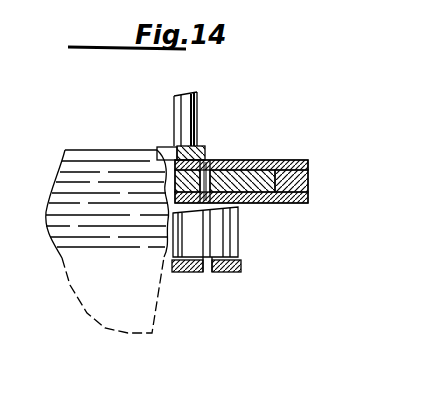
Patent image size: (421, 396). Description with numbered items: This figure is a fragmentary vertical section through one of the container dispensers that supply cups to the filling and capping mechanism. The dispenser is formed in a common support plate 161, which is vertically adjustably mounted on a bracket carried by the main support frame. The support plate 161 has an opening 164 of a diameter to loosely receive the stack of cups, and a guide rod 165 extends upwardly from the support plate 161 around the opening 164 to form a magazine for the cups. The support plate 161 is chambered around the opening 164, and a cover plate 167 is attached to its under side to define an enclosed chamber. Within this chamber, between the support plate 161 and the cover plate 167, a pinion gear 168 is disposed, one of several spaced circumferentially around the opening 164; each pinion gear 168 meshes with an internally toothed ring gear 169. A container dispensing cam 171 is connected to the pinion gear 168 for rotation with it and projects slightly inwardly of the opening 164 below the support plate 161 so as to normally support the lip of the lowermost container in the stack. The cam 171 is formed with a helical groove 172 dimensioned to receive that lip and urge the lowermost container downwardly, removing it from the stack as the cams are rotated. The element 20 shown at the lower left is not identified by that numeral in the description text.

The support member 20 is at (147, 312).
The support plate 161 is at (268, 162).
The opening 164 is at (170, 158).
The guide rod 165 is at (197, 111).
The cover plate 167 is at (255, 197).
The pinion gear 168 is at (218, 162).
The ring gear 169 is at (305, 163).
The container dispensing cam 171 is at (222, 258).
The helical groove 172 is at (198, 213).